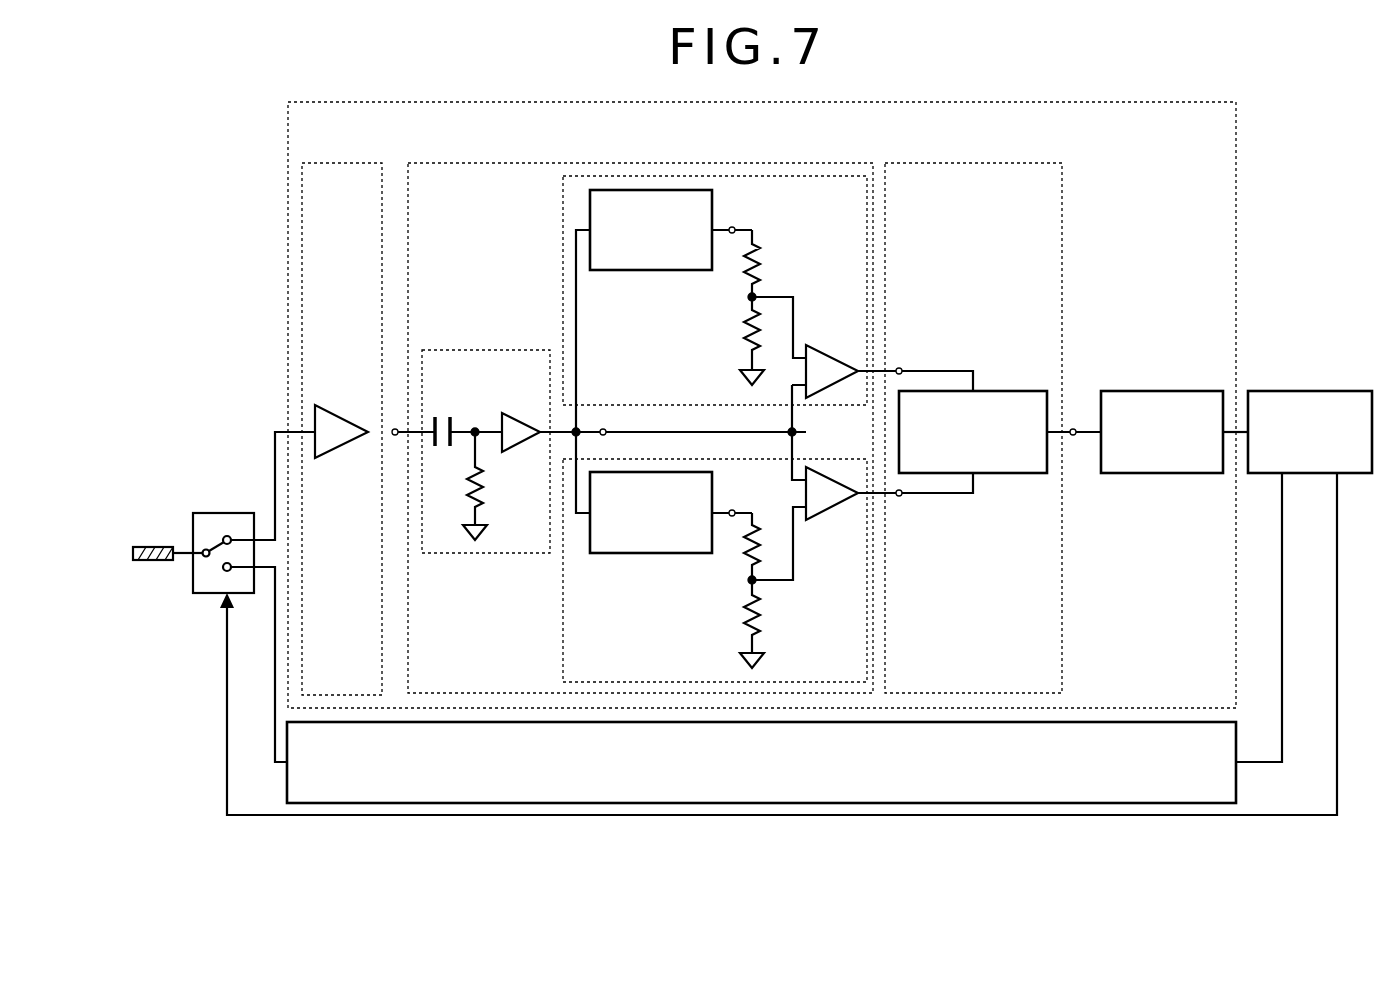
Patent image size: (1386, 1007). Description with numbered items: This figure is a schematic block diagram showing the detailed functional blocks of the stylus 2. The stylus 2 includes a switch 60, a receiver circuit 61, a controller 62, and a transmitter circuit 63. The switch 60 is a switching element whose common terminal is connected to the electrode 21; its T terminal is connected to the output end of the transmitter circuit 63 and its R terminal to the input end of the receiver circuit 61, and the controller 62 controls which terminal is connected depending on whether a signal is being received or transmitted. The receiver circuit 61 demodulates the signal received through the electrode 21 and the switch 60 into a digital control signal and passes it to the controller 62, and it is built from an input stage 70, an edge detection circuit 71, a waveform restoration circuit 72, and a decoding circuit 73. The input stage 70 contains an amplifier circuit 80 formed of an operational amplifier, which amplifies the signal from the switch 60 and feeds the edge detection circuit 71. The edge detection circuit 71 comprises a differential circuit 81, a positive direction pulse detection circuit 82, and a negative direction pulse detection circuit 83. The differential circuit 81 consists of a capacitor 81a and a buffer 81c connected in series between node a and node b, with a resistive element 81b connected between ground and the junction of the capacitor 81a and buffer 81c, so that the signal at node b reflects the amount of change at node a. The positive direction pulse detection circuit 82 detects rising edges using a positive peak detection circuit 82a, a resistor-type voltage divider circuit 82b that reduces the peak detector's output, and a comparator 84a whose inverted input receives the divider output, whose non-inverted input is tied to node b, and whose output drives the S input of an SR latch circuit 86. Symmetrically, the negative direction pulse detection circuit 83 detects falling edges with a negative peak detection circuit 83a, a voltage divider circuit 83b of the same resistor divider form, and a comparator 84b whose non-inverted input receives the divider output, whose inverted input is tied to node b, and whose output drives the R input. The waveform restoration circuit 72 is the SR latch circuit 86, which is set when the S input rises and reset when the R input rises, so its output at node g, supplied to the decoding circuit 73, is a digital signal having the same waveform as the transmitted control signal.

The stylus 2 is at (1303, 138).
The electrode 21 is at (151, 547).
The switch 60 is at (226, 511).
The receiver circuit 61 is at (1237, 220).
The controller 62 is at (1305, 390).
The transmitter circuit 63 is at (1237, 780).
The input stage 70 is at (338, 163).
The edge detection circuit 71 is at (604, 163).
The waveform restoration circuit 72 is at (942, 163).
The decoding circuit 73 is at (1158, 390).
The amplifier circuit 80 is at (342, 458).
The differential circuit 81 is at (491, 553).
The capacitor 81a is at (444, 419).
The resistive element 81b is at (494, 483).
The buffer 81c is at (517, 419).
The positive direction pulse detection circuit 82 is at (562, 285).
The positive peak detection circuit 82a is at (632, 270).
The voltage divider circuit 82b is at (734, 306).
The negative direction pulse detection circuit 83 is at (562, 649).
The negative peak detection circuit 83a is at (632, 553).
The voltage divider circuit 83b is at (734, 589).
The comparator 84a is at (838, 354).
The comparator 84b is at (832, 520).
The SR latch circuit 86 is at (1010, 390).